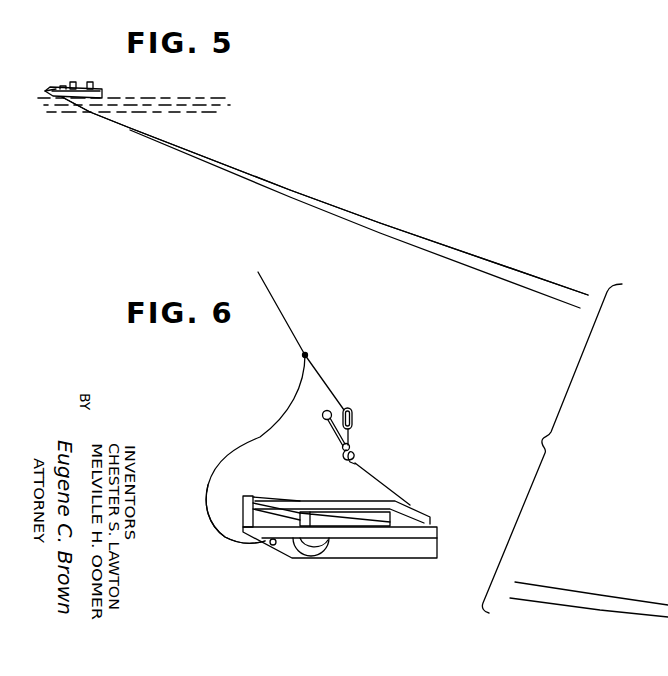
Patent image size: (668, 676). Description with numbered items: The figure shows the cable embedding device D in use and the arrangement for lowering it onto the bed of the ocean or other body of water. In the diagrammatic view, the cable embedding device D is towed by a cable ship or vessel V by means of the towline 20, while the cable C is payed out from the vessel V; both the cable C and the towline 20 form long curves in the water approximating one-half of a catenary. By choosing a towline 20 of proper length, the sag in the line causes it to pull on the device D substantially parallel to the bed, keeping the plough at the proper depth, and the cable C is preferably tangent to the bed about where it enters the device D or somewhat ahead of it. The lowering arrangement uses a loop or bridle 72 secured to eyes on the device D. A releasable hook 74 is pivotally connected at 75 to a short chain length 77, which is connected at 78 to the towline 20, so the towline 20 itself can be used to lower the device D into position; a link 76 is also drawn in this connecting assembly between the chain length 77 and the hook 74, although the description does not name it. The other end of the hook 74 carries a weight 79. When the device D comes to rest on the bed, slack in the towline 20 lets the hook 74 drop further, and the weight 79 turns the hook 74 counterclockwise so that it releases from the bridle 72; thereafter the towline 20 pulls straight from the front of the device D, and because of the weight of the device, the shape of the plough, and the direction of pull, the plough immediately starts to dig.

In FIG. 5, the cable ship or vessel V is at (103, 91).
In FIG. 5, the cable C is at (423, 238).
In FIG. 6, the cable C is at (216, 493).
In FIG. 5, the towline 20 is at (447, 259).
In FIG. 6, the towline 20 is at (297, 343).
In FIG. 6, the loop or bridle 72 is at (382, 487).
In FIG. 6, the releasable hook 74 is at (357, 458).
In FIG. 6, the pivot connection 75 is at (350, 445).
In FIG. 6, the link 76 is at (352, 426).
In FIG. 6, the short chain length 77 is at (335, 393).
In FIG. 6, the connection to towline 78 is at (312, 354).
In FIG. 6, the weight 79 is at (324, 420).
In FIG. 6, the cable embedding device D is at (343, 503).